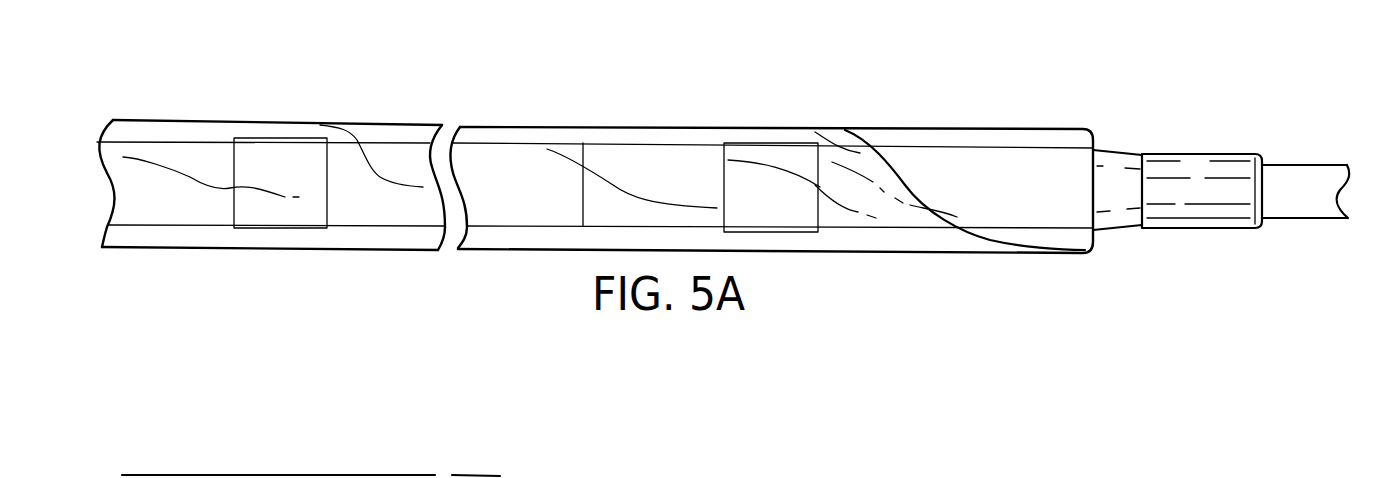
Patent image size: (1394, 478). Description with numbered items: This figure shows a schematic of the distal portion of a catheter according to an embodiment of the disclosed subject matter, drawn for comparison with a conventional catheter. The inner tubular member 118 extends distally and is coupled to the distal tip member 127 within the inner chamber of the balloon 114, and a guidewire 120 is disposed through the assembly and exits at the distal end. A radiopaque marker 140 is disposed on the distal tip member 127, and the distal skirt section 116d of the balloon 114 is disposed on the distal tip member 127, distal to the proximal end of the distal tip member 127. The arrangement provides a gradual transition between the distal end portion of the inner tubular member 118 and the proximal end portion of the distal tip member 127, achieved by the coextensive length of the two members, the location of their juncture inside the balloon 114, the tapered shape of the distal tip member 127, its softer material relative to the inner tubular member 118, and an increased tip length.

The balloon 114 is at (627, 128).
The inner tubular member 118 is at (509, 128).
The radiopaque marker 140 is at (805, 128).
The distal skirt section 116d is at (1148, 272).
The distal tip member 127 is at (1203, 152).
The guidewire 120 is at (1298, 172).